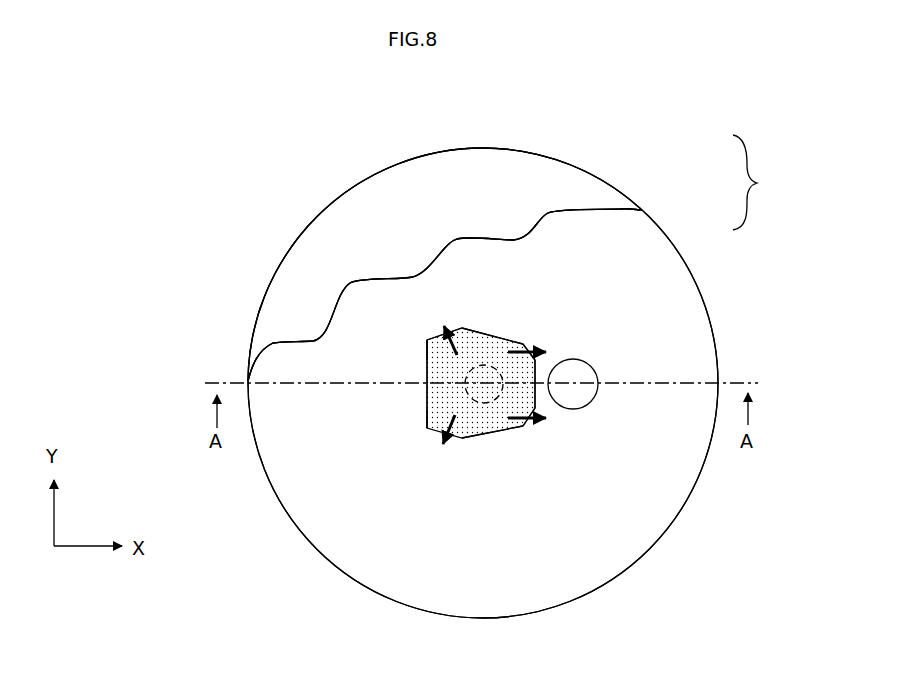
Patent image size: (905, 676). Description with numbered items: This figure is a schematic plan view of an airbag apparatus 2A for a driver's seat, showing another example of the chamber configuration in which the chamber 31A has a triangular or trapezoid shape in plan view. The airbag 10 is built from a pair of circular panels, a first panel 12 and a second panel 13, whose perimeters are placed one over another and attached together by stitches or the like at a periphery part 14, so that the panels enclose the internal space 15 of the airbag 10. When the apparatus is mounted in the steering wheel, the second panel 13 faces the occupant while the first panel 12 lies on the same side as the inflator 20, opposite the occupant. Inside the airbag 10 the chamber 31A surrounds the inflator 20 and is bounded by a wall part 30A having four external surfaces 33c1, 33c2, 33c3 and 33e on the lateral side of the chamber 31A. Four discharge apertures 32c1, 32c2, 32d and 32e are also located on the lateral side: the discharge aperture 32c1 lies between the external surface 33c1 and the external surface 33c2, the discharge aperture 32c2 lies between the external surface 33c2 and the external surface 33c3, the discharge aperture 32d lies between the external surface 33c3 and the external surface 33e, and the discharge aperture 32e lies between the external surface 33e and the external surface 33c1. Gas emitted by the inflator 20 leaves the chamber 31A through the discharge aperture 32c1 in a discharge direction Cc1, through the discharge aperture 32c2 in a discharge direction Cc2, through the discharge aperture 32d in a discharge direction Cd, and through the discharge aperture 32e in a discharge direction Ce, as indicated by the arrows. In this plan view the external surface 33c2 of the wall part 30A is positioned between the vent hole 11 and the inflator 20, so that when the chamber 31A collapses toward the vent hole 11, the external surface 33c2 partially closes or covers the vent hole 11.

The airbag apparatus 2A is at (267, 130).
The airbag 10 is at (760, 182).
The vent hole 11 is at (598, 378).
The first panel 12 is at (630, 246).
The second panel 13 is at (577, 190).
The periphery part 14 is at (309, 226).
The internal space 15 is at (339, 542).
The inflator 20 is at (478, 414).
The wall part 30A is at (472, 346).
The chamber 31A is at (414, 341).
The discharge aperture 32e is at (427, 340).
The discharge aperture 32d is at (432, 437).
The discharge aperture 32c1 is at (530, 343).
The discharge aperture 32c2 is at (523, 426).
The external surface 33e is at (425, 393).
The external surface 33c1 is at (487, 336).
The external surface 33c2 is at (562, 358).
The external surface 33c3 is at (485, 438).
The discharge direction Ce is at (427, 352).
The discharge direction Cd is at (428, 421).
The discharge direction Cc1 is at (512, 340).
The discharge direction Cc2 is at (512, 430).